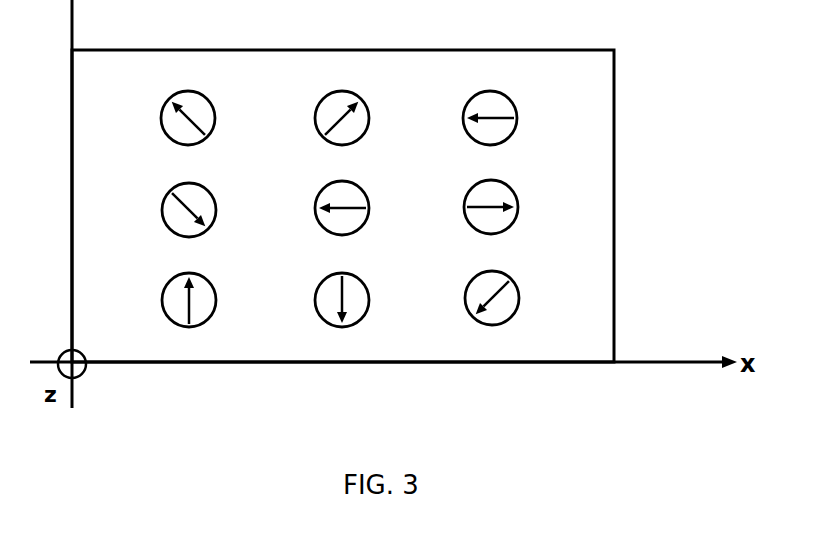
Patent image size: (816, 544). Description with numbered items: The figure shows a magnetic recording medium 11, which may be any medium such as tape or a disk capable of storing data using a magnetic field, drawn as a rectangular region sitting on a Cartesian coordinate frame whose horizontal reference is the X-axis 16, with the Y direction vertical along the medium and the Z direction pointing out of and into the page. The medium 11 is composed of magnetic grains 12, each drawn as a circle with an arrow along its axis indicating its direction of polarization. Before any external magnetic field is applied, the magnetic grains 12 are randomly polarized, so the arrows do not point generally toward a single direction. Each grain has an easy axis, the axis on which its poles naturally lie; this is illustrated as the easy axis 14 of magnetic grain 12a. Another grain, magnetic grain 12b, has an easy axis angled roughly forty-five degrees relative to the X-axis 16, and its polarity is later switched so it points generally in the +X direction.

The magnetic recording medium 11 is at (597, 124).
The magnetic grains 12 is at (400, 326).
The magnetic grain 12a is at (494, 197).
The magnetic grain 12b is at (505, 303).
The easy axis 14 is at (490, 212).
The X-axis 16 is at (648, 361).